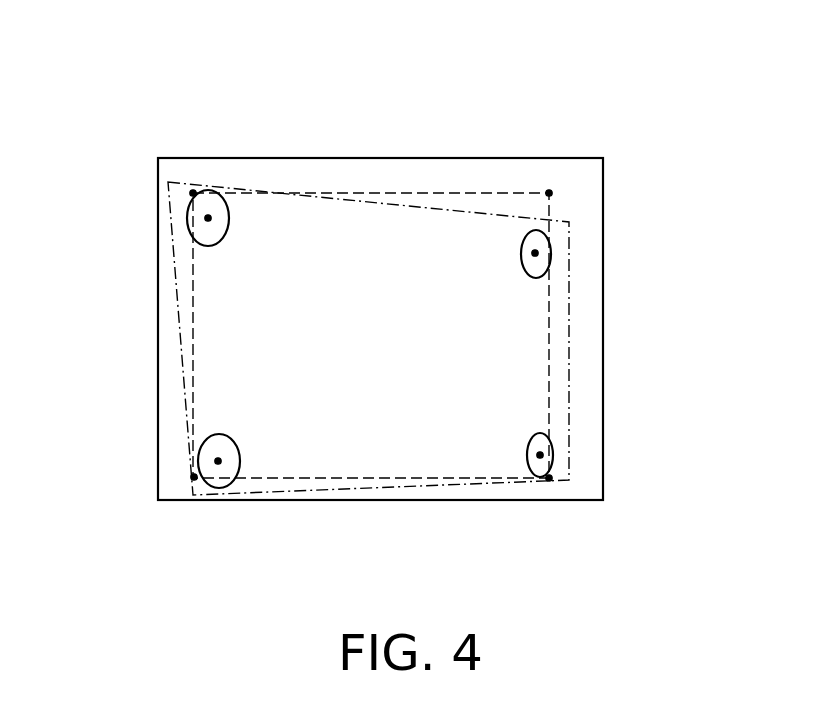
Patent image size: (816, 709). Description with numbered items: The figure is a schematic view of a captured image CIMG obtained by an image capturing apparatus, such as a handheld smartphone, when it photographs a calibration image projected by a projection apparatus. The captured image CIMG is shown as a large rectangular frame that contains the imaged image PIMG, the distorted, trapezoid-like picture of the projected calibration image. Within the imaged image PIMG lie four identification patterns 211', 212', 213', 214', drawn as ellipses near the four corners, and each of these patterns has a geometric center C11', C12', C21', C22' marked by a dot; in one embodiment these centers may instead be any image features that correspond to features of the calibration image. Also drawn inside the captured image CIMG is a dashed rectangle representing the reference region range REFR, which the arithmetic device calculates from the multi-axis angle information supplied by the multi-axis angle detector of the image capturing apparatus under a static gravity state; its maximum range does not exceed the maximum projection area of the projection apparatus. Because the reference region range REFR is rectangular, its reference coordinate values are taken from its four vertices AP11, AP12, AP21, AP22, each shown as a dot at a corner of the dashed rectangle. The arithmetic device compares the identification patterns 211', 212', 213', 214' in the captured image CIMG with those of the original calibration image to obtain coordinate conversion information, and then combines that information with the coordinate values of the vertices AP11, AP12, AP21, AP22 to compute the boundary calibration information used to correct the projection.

The captured image CIMG is at (584, 158).
The imaged image PIMG is at (255, 191).
The reference region range REFR is at (462, 193).
The vertex of the reference region range AP11 is at (193, 190).
The vertex of the reference region range AP12 is at (552, 192).
The vertex of the reference region range AP21 is at (194, 479).
The vertex of the reference region range AP22 is at (549, 480).
The identification pattern 211' is at (138, 218).
The identification pattern 212' is at (609, 236).
The identification pattern 213' is at (143, 461).
The identification pattern 214' is at (612, 435).
The geometric center C11' is at (129, 250).
The geometric center C12' is at (614, 265).
The geometric center C21' is at (238, 526).
The geometric center C22' is at (618, 460).